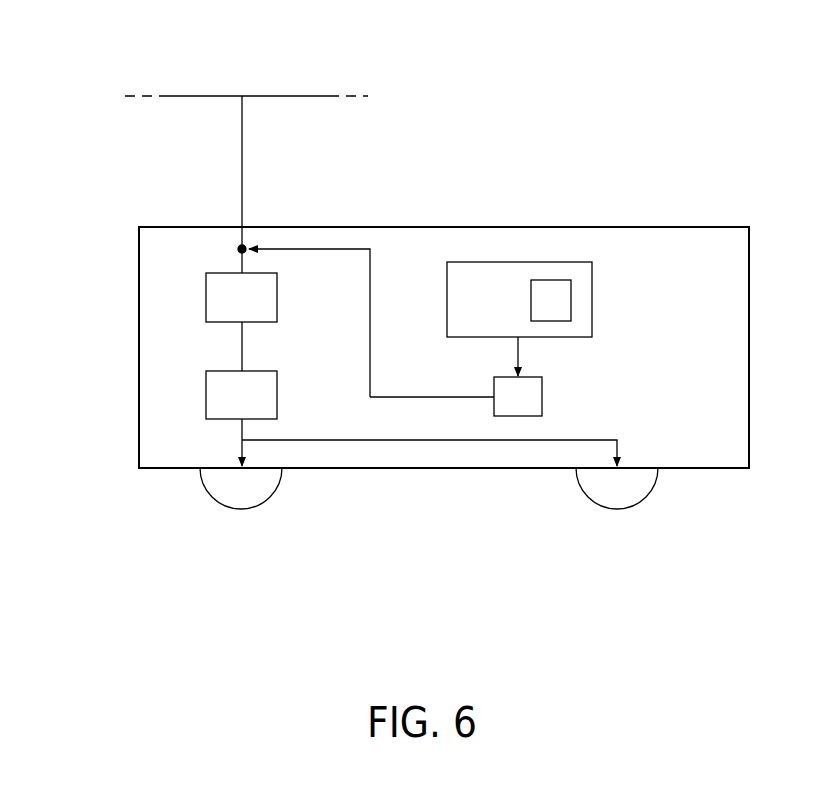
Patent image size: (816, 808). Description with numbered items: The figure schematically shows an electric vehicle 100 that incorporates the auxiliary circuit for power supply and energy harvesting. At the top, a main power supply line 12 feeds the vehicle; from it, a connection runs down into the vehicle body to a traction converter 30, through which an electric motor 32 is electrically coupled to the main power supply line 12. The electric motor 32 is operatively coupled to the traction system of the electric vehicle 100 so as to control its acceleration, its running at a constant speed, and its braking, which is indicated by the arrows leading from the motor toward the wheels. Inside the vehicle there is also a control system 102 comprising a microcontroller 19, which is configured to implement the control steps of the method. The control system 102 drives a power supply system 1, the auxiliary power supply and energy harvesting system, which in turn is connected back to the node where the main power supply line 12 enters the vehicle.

The electric vehicle 100 is at (182, 188).
The main power supply line 12 is at (287, 96).
The traction converter 30 is at (256, 309).
The electric motor 32 is at (256, 407).
The control system 102 is at (463, 311).
The microcontroller 19 is at (563, 312).
The power supply system 1 is at (512, 409).